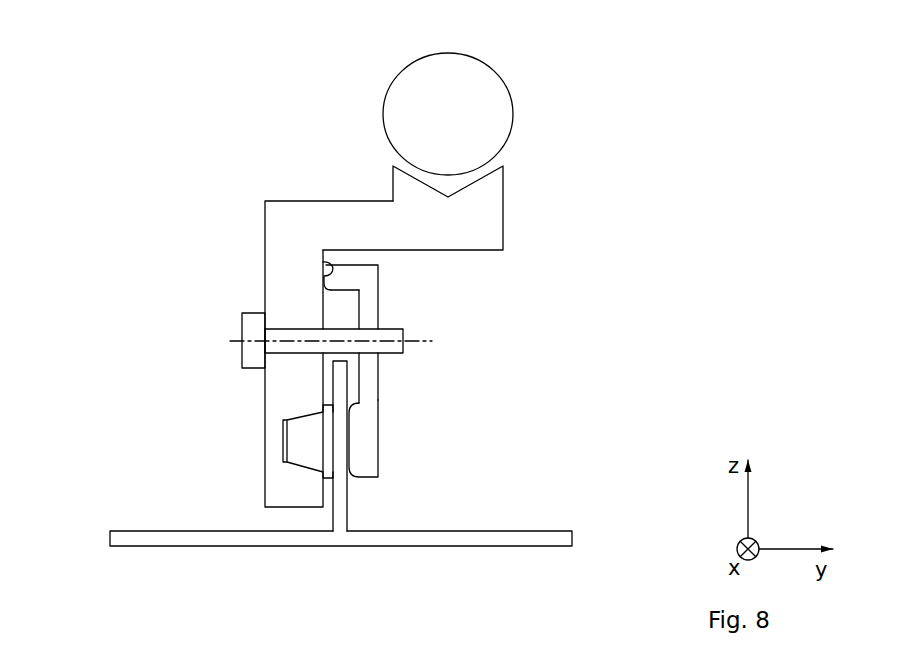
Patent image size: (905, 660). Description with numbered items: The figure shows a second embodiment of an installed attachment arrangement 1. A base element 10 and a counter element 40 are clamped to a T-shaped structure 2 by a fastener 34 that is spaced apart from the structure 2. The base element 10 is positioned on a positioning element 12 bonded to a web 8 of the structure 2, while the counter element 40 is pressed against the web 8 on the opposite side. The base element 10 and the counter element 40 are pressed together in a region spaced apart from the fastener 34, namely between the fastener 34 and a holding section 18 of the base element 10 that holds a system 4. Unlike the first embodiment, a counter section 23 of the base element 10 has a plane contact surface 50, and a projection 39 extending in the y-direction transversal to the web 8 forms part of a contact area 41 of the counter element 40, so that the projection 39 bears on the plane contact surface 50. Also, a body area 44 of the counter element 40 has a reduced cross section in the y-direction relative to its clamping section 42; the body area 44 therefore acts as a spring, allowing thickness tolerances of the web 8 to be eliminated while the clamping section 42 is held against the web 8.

The attachment arrangement 1 is at (140, 103).
The T-shaped structure 2 is at (575, 531).
The system 4 is at (511, 96).
The web 8 is at (340, 399).
The base element 10 is at (263, 272).
The positioning element 12 is at (284, 441).
The holding section 18 is at (475, 228).
The counter section 23 is at (283, 275).
The fastener 34 is at (241, 324).
The projection 39 is at (330, 278).
The counter element 40 is at (380, 373).
The contact area 41 is at (382, 273).
The clamping section 42 is at (360, 443).
The body area 44 is at (370, 322).
The plane contact surface 50 is at (326, 261).